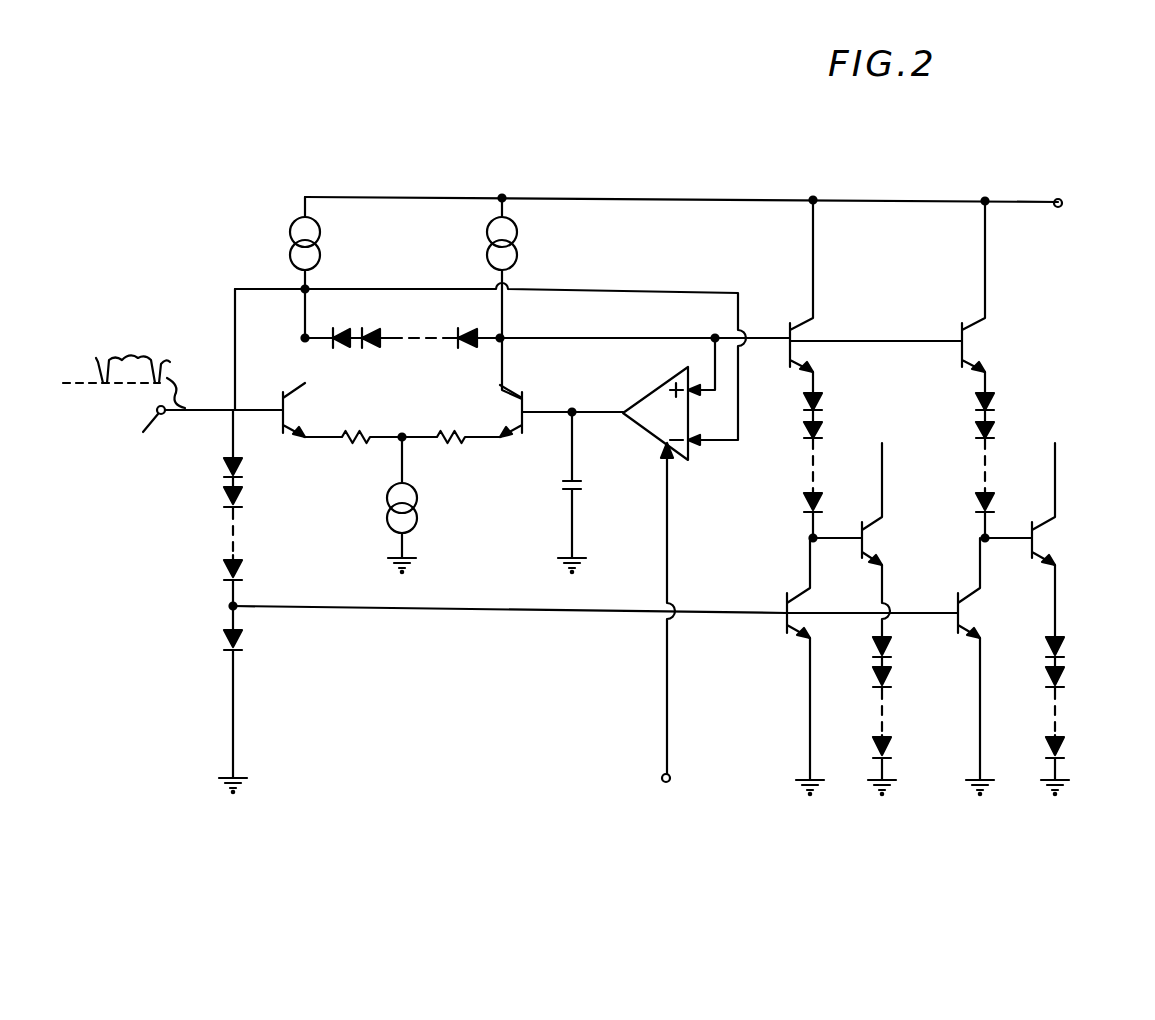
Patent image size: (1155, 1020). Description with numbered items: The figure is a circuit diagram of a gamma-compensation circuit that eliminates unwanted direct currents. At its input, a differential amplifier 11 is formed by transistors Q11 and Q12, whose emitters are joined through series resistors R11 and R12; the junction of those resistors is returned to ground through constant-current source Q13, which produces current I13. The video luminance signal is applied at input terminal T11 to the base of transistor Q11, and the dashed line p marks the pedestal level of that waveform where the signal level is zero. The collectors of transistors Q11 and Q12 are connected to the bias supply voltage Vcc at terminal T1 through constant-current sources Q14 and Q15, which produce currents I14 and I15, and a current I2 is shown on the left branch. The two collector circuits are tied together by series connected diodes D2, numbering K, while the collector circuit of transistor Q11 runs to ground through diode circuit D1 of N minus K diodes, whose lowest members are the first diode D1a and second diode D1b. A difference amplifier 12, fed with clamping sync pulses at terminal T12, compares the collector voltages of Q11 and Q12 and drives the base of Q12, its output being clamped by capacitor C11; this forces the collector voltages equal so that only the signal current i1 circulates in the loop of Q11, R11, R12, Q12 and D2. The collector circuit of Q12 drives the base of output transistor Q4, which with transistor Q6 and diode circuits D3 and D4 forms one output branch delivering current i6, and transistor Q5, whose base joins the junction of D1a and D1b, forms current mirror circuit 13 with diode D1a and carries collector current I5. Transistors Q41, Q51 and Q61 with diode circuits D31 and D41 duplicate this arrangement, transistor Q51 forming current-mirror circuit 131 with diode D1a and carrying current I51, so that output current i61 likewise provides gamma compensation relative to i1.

The differential amplifier 11 is at (510, 518).
The difference amplifier 12 is at (650, 432).
The current mirror circuit 13 is at (452, 690).
The current-mirror circuit 131 is at (950, 728).
The transistor Q11 is at (283, 428).
The transistor Q12 is at (522, 420).
The constant-current source Q13 is at (416, 523).
The constant-current source Q14 is at (320, 255).
The constant-current source Q15 is at (487, 256).
The output transistor Q4 is at (790, 355).
The transistor Q41 is at (962, 355).
The transistor Q5 is at (787, 620).
The transistor Q51 is at (958, 620).
The output transistor Q6 is at (862, 548).
The transistor Q61 is at (1032, 548).
The resistor R11 is at (372, 440).
The resistor R12 is at (438, 442).
The capacitor C11 is at (582, 483).
The series connected diode circuit D1 is at (213, 656).
The first diode D1a is at (243, 640).
The second diode D1b is at (243, 572).
The series connected diodes D2 is at (475, 352).
The series-connected diode circuit D3 is at (798, 388).
The diode circuit D31 is at (970, 388).
The series-connected diode circuit D4 is at (866, 632).
The diode circuit D41 is at (1072, 632).
The terminal T1 is at (1057, 207).
The input terminal T11 is at (186, 433).
The terminal T12 is at (664, 782).
The current I2 is at (217, 312).
The collector current I5 is at (796, 535).
The collector current I51 is at (965, 535).
The current I13 is at (375, 495).
The current I14 is at (276, 233).
The current I15 is at (525, 233).
The signal current component i1 is at (355, 376).
The current i6 is at (893, 452).
The current i61 is at (1068, 452).
The pedestal level line p is at (114, 381).
The bias supply voltage Vcc is at (1066, 183).